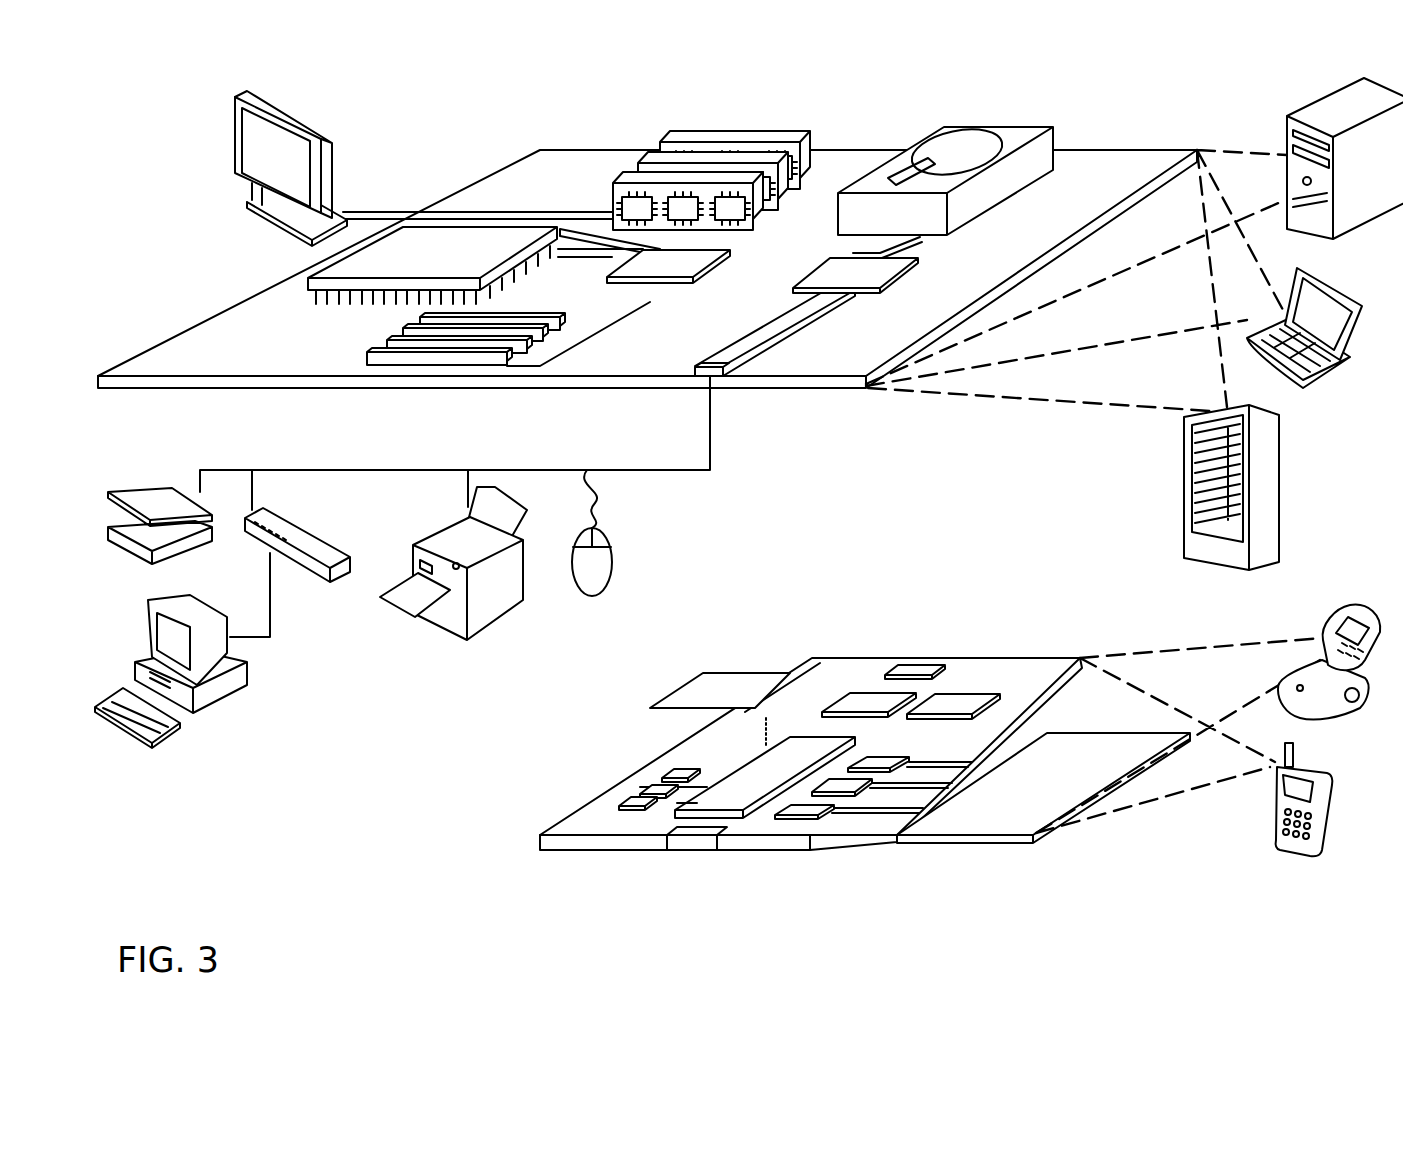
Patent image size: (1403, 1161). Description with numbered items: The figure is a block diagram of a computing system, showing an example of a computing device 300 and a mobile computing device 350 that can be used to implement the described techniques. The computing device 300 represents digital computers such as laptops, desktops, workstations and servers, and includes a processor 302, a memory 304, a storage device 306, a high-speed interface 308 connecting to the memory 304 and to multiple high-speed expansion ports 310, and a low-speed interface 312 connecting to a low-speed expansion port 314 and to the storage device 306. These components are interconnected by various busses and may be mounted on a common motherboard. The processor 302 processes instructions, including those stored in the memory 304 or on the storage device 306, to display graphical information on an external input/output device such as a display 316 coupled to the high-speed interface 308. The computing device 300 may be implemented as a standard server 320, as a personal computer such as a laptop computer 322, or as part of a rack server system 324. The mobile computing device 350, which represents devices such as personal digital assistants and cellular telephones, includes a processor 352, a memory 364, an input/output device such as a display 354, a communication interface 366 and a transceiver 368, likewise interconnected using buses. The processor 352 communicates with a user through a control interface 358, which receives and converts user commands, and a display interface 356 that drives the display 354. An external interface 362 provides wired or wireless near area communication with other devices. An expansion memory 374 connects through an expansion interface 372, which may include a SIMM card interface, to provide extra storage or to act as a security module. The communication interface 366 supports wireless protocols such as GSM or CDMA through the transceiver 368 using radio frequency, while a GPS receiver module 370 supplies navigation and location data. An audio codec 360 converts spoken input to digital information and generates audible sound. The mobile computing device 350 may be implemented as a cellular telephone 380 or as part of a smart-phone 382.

The computing device 300 is at (452, 122).
The processor 302 is at (306, 282).
The memory 304 is at (680, 142).
The storage device 306 is at (943, 127).
The high-speed interface 308 is at (643, 263).
The high-speed expansion ports 310 is at (397, 345).
The low-speed interface 312 is at (837, 270).
The low-speed expansion port 314 is at (716, 374).
The display 316 is at (233, 97).
The standard server 320 is at (1287, 132).
The laptop computer 322 is at (1305, 379).
The rack server system 324 is at (1184, 503).
The mobile computing device 350 is at (514, 846).
The processor 352 is at (735, 800).
The display 354 is at (997, 812).
The display interface 356 is at (810, 808).
The control interface 358 is at (847, 787).
The audio codec 360 is at (878, 763).
The external interface 362 is at (697, 837).
The memory 364 is at (643, 790).
The communication interface 366 is at (866, 700).
The transceiver 368 is at (952, 703).
The GPS receiver module 370 is at (927, 660).
The expansion interface 372 is at (792, 673).
The expansion memory 374 is at (712, 672).
The cellular telephone 380 is at (1338, 608).
The smart-phone 382 is at (1277, 797).